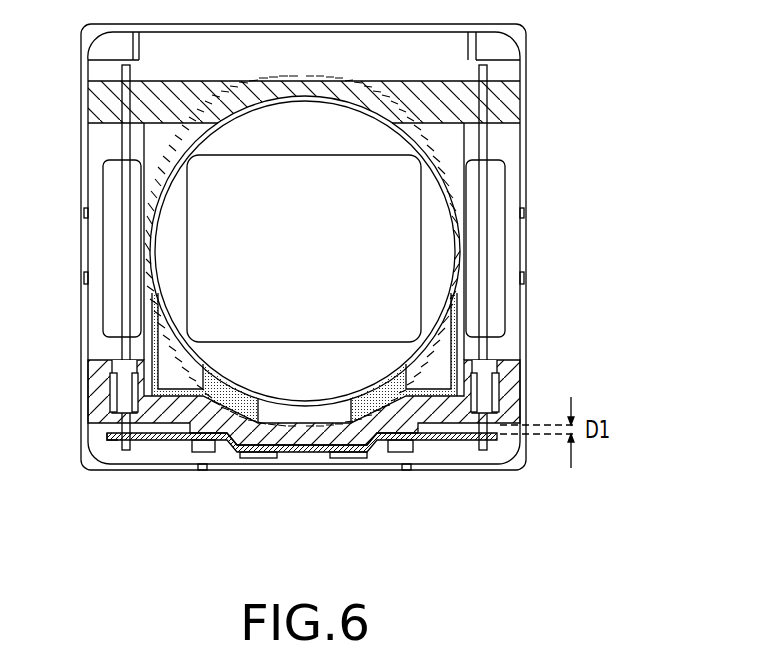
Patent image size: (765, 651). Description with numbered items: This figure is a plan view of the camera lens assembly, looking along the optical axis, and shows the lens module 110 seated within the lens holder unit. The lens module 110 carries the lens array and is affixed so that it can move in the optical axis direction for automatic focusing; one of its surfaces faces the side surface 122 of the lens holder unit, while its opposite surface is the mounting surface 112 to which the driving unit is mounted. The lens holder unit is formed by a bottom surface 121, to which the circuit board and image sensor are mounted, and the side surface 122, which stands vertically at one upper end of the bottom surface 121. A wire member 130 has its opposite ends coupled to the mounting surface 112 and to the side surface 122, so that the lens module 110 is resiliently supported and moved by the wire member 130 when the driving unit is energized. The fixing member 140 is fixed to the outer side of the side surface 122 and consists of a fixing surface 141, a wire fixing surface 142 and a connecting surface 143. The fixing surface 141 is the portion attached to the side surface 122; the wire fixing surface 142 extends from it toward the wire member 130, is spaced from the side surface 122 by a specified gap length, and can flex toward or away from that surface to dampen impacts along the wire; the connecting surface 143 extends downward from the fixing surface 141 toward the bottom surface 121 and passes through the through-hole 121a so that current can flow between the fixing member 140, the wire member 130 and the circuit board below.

The lens module 110 is at (590, 257).
The mounting surface 112 is at (597, 113).
The bottom surface 121 is at (595, 47).
The through-hole 121a is at (288, 523).
The side surface 122 is at (588, 361).
The wire member 130 is at (595, 168).
The fixing member 140 is at (460, 513).
The fixing surface 141 is at (430, 440).
The wire fixing surface 142 is at (100, 523).
The connecting surface 143 is at (355, 523).